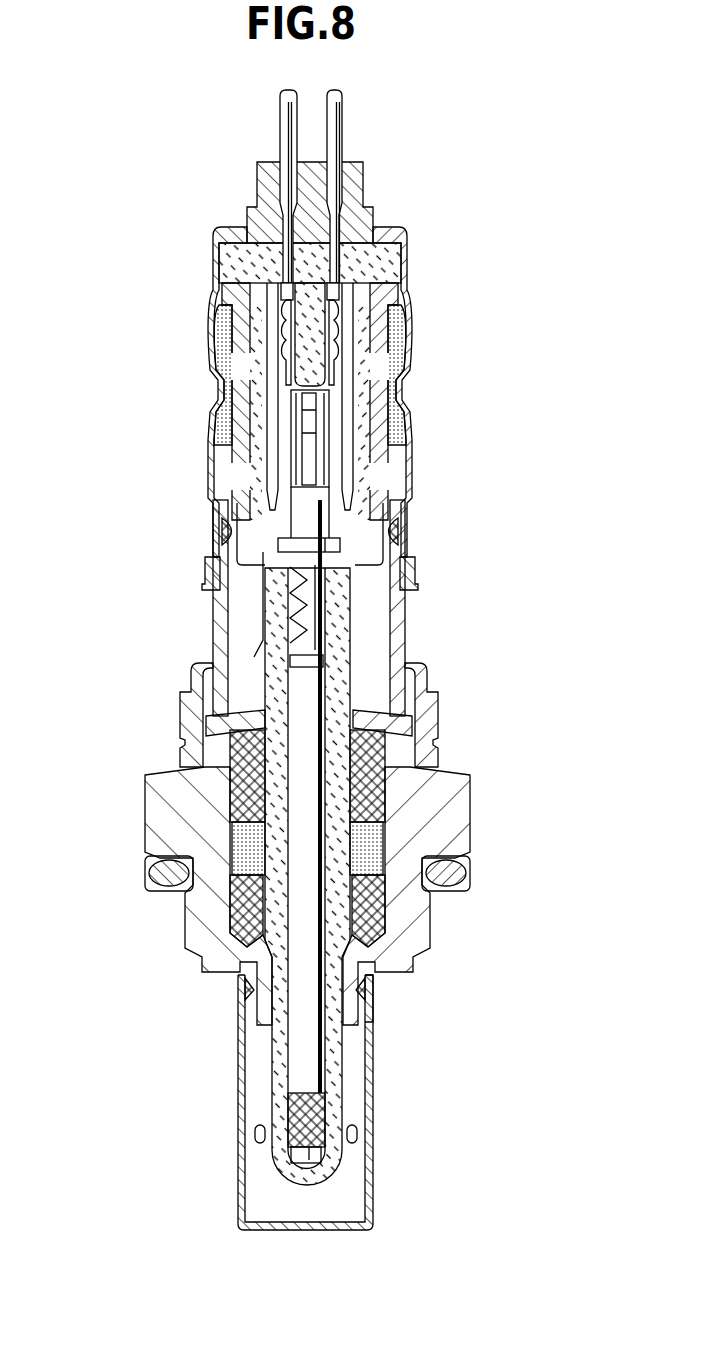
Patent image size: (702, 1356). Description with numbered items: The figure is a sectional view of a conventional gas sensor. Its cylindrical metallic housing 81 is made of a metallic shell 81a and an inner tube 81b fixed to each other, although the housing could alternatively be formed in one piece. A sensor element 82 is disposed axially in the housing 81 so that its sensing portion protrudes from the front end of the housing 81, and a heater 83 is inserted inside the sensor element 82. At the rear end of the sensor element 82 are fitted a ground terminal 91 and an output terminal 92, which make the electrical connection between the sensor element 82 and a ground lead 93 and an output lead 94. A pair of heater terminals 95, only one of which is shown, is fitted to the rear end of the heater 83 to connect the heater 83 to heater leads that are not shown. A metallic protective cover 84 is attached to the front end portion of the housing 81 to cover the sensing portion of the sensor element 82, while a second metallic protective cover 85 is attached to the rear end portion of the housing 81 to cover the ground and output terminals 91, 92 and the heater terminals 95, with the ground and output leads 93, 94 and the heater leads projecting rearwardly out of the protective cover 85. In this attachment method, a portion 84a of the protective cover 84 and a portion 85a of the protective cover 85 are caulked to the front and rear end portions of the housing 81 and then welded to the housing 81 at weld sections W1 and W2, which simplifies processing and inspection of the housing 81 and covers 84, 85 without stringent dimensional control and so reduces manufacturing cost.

The housing 81 is at (247, 762).
The metallic shell 81a is at (271, 877).
The inner tube 81b is at (223, 624).
The sensor element 82 is at (333, 1058).
The heater 83 is at (300, 1050).
The protective cover 84 is at (375, 1137).
The portion of protective cover 84a is at (375, 1012).
The protective cover 85 is at (209, 443).
The portion of protective cover 85a is at (408, 547).
The ground terminal 91 is at (283, 322).
The output terminal 92 is at (341, 323).
The ground lead 93 is at (289, 122).
The output lead 94 is at (333, 121).
The heater terminal 95 is at (309, 448).
The weld section W1 is at (373, 993).
The weld section W2 is at (389, 532).